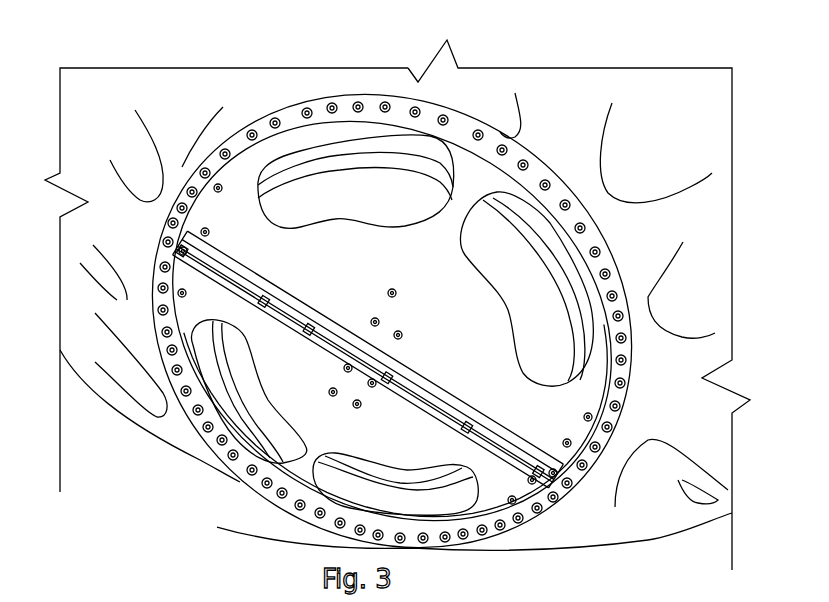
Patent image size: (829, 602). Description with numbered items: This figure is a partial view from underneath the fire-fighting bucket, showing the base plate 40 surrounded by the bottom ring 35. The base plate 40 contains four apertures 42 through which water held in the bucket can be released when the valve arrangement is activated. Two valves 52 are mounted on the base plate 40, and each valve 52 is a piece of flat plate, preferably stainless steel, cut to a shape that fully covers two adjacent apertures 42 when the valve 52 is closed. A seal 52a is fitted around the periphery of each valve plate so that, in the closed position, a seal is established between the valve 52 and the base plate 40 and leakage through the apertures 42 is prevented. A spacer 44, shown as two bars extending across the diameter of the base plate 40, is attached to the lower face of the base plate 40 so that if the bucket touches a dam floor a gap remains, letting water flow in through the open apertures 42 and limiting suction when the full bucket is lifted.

The bottom ring 35 is at (458, 128).
The base plate 40 is at (461, 352).
The aperture 42 is at (456, 295).
The spacer 44 is at (217, 275).
The valve 52 is at (320, 193).
The seal 52a is at (447, 166).